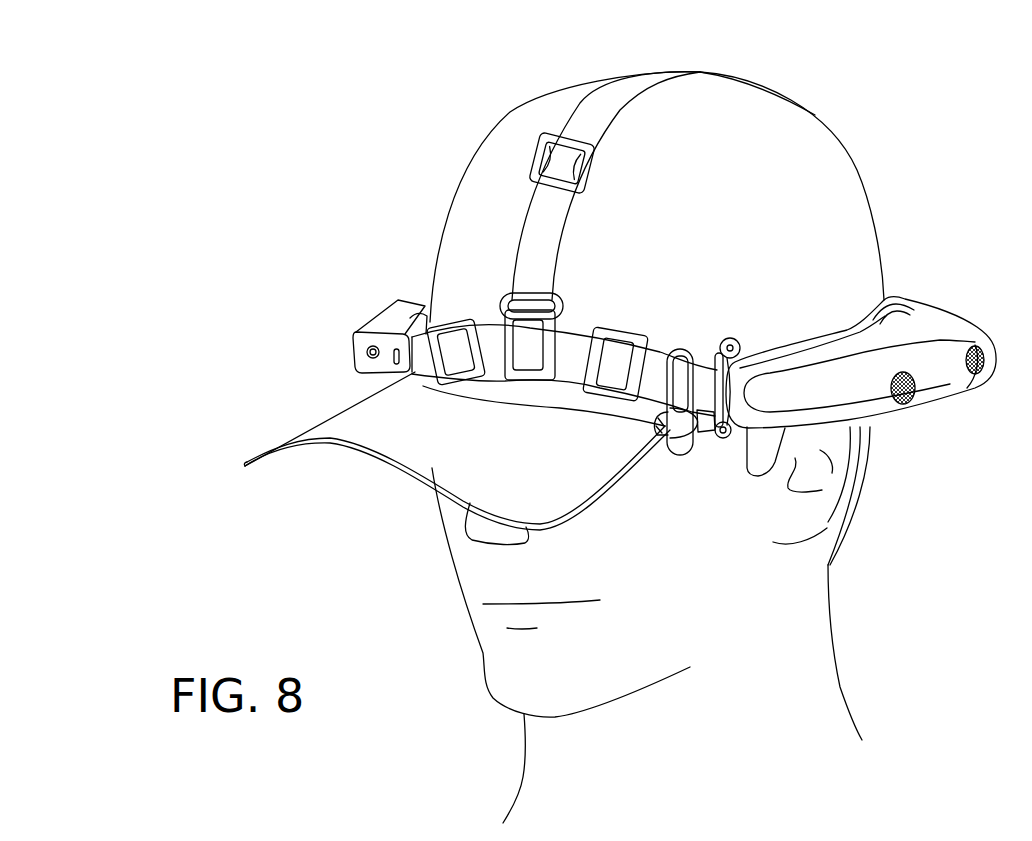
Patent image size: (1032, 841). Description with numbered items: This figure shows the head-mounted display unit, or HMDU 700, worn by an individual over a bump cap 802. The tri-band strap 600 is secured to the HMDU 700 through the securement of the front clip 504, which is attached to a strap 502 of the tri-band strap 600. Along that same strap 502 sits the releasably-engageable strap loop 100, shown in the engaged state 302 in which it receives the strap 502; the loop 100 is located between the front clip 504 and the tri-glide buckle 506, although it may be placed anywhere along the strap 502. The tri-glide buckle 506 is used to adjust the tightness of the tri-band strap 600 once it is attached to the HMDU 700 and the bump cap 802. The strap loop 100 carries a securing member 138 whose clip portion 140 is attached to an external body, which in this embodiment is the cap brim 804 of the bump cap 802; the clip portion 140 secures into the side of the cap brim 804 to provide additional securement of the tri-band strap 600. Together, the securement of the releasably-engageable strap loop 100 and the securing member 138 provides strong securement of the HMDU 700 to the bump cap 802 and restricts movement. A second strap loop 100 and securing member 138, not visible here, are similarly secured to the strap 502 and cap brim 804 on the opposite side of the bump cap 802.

The releasably-engageable strap loop 100 is at (685, 348).
The securing member 138 is at (688, 443).
The clip portion 140 is at (672, 445).
The engaged state 302 is at (658, 425).
The strap 502 is at (570, 366).
The front clip 504 is at (722, 440).
The tri-glide buckle 506 is at (450, 313).
The tri-band strap 600 is at (653, 74).
The HMDU 700 is at (945, 380).
The bump cap 802 is at (452, 183).
The cap brim 804 is at (358, 417).